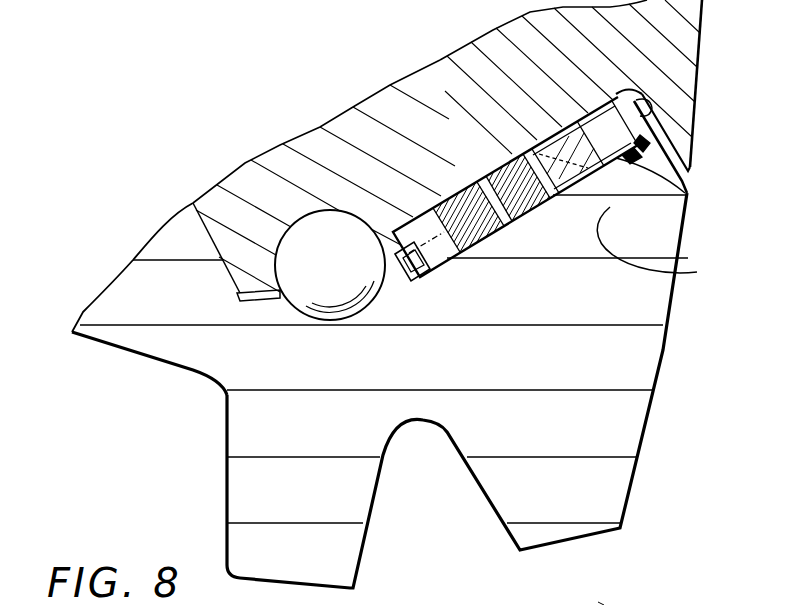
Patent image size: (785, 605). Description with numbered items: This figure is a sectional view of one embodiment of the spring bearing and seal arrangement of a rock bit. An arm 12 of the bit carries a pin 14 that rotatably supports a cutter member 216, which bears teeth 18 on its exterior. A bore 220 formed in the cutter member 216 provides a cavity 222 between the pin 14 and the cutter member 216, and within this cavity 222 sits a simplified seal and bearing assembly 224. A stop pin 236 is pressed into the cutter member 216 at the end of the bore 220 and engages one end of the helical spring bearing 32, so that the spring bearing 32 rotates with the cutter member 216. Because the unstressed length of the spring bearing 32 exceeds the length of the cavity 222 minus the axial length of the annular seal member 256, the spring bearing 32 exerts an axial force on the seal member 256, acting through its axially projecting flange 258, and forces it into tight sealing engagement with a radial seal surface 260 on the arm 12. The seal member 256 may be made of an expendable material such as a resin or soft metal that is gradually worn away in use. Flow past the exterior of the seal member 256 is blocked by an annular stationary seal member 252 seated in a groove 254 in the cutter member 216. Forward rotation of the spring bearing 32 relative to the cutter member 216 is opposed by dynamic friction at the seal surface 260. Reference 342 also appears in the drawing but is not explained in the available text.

The arm 12 is at (658, 32).
The pin 14 is at (245, 182).
The teeth 18 is at (242, 493).
The helical spring bearing 32 is at (443, 190).
The cutter member 216 is at (112, 294).
The bore 220 is at (478, 226).
The cavity 222 is at (478, 184).
The seal and bearing assembly 224 is at (458, 184).
The stop pin 236 is at (413, 277).
The annular stationary seal member 252 is at (680, 197).
The groove 254 is at (680, 274).
The annular seal member 256 is at (647, 103).
The axially projecting flange 258 is at (563, 147).
The radial seal surface 260 is at (685, 143).
The lower element 342 is at (600, 603).